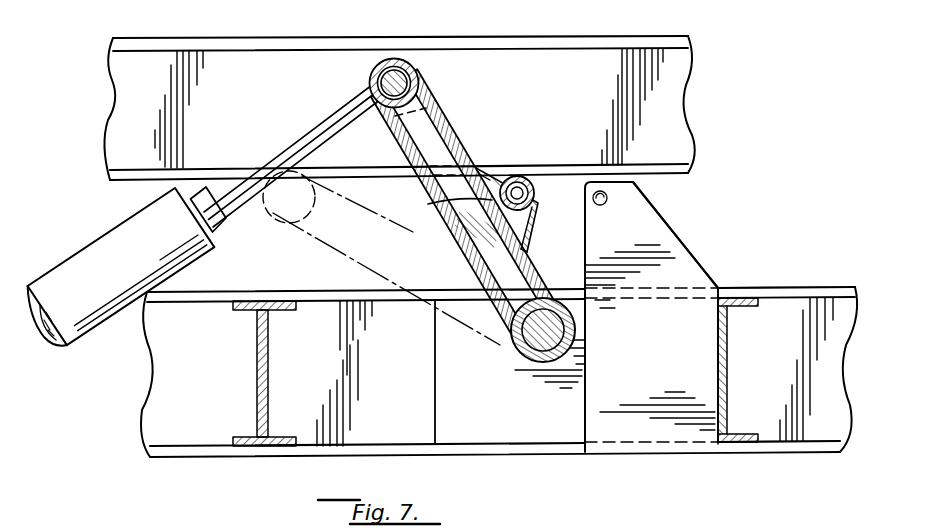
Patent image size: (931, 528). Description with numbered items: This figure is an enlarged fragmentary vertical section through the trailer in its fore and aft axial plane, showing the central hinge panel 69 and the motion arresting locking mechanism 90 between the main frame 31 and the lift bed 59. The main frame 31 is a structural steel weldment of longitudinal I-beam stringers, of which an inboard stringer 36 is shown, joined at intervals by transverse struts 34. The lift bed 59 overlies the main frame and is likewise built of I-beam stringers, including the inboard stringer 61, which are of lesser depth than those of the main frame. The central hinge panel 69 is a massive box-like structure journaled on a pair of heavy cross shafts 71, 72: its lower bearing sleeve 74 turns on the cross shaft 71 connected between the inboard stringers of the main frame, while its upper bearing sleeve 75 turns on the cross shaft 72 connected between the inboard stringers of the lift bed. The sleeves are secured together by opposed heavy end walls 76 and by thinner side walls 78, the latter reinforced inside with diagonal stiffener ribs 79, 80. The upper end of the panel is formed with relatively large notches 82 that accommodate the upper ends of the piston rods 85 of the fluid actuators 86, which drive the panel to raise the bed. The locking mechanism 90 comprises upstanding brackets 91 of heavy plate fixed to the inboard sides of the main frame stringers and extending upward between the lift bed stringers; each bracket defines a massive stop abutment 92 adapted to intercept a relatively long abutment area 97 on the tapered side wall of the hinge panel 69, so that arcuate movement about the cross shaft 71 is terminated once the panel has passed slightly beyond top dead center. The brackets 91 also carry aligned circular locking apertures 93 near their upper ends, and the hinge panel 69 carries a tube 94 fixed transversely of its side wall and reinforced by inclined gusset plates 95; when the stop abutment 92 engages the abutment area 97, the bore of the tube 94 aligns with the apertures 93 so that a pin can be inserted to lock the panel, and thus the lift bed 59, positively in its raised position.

The main frame 31 is at (812, 284).
The transverse struts 34 is at (257, 365).
The inboard stringer 36 is at (822, 338).
The lift bed 59 is at (683, 34).
The inboard stringer 61 is at (673, 92).
The central hinge panel 69 is at (458, 208).
The cross shaft 71 is at (527, 352).
The cross shaft 72 is at (384, 62).
The bearing sleeve 74 is at (576, 339).
The bearing sleeve 75 is at (406, 58).
The end walls 76 is at (457, 240).
The side walls 78 is at (460, 267).
The diagonal stiffener rib 79 is at (421, 203).
The diagonal stiffener rib 80 is at (406, 153).
The notches 82 is at (424, 108).
The piston rod 85 is at (295, 138).
The fluid actuator 86 is at (96, 252).
The motion arresting locking mechanism 90 is at (680, 225).
The upstanding bracket 91 is at (688, 262).
The stop abutment 92 is at (585, 230).
The locking aperture 93 is at (608, 200).
The tube 94 is at (530, 182).
The gusset plates 95 is at (508, 168).
The abutment area 97 is at (545, 253).